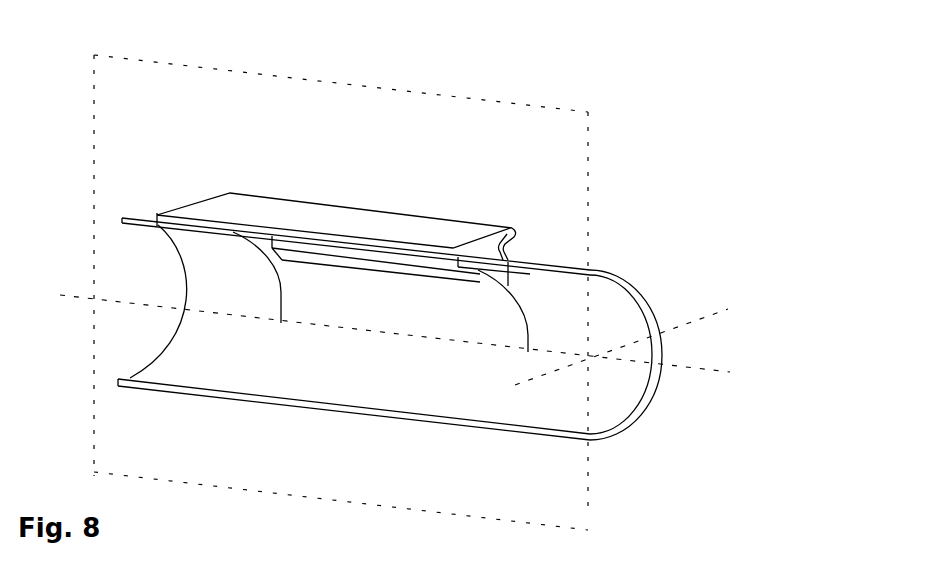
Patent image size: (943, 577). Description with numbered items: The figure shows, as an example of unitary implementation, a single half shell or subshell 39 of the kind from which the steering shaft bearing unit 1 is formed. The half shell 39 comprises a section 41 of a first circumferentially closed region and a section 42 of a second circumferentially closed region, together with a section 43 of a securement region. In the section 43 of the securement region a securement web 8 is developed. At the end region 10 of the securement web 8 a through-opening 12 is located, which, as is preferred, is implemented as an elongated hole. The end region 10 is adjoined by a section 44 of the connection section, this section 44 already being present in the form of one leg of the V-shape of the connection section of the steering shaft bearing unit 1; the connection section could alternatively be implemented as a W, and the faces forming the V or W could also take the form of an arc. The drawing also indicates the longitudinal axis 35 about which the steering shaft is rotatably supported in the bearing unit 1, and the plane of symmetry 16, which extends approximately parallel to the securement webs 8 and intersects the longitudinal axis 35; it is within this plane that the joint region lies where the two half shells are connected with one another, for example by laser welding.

The steering shaft bearing unit 1 is at (603, 263).
The securement web 8 is at (514, 254).
The end region 10 is at (515, 228).
The through-opening 12 is at (368, 247).
The plane of symmetry 16 is at (550, 465).
The longitudinal axis 35 is at (638, 335).
The half shell 39 is at (656, 294).
The section of first circumferentially closed region 41 is at (555, 398).
The section of second circumferentially closed region 42 is at (197, 357).
The section of securement region 43 is at (405, 366).
The section of connection section 44 is at (333, 218).